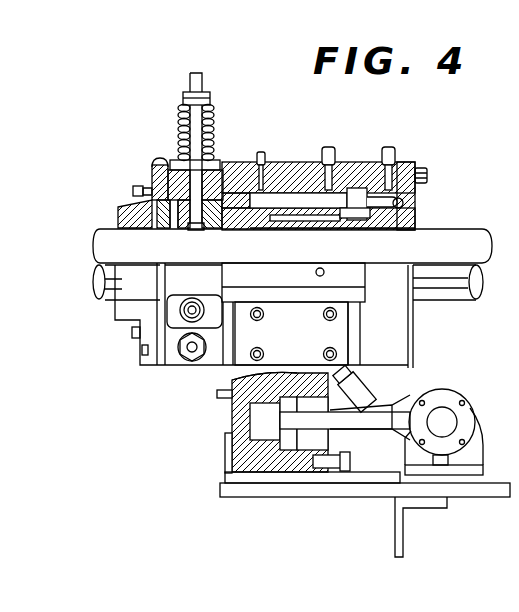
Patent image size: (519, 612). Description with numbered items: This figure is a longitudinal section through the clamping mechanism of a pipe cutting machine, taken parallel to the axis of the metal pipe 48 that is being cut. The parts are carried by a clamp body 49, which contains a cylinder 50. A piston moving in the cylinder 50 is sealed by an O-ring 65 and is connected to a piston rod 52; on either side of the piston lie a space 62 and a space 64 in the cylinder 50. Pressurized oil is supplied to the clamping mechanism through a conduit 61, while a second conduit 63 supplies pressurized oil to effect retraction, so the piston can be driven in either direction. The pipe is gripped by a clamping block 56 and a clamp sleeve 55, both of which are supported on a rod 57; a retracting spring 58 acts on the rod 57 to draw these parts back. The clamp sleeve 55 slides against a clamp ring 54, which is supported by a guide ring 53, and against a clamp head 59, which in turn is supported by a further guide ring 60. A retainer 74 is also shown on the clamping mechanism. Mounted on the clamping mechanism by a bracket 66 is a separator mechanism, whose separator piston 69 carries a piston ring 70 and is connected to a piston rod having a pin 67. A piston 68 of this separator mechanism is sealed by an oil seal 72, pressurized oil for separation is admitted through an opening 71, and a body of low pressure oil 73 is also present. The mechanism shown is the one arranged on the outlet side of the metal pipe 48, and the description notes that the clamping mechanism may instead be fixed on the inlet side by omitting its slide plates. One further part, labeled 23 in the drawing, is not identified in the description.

The base plate 23 is at (458, 497).
The metal pipe 48 is at (95, 276).
The clamp body 49 is at (416, 215).
The cylinder 50 is at (360, 226).
The piston rod 52 is at (300, 226).
The guide ring 53 is at (267, 226).
The clamp ring 54 is at (233, 226).
The clamp sleeve 55 is at (163, 228).
The clamping block 56 is at (203, 226).
The rod 57 is at (206, 92).
The retracting spring 58 is at (178, 117).
The clamp head 59 is at (152, 187).
The guide ring 60 is at (117, 207).
The conduit 61 is at (403, 199).
The space in the cylinder 62 is at (388, 228).
The conduit 63 is at (322, 197).
The space in the cylinder 64 is at (328, 226).
The O-ring 65 is at (342, 226).
The bracket 66 is at (468, 450).
The pin 67 is at (455, 420).
The piston 68 is at (390, 410).
The separator piston 69 is at (310, 452).
The piston ring 70 is at (292, 440).
The opening 71 is at (362, 393).
The oil seal 72 is at (305, 378).
The body of low pressure oil 73 is at (241, 483).
The retainer 74 is at (157, 160).